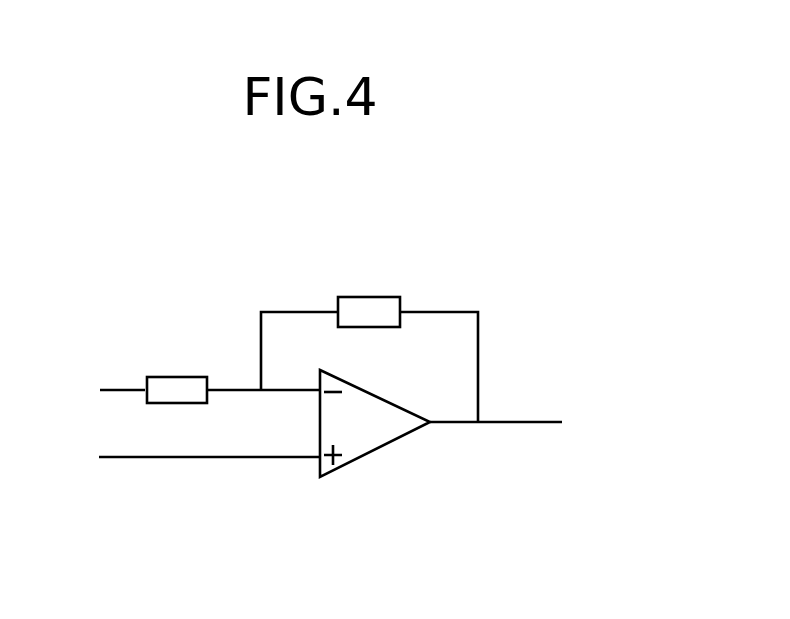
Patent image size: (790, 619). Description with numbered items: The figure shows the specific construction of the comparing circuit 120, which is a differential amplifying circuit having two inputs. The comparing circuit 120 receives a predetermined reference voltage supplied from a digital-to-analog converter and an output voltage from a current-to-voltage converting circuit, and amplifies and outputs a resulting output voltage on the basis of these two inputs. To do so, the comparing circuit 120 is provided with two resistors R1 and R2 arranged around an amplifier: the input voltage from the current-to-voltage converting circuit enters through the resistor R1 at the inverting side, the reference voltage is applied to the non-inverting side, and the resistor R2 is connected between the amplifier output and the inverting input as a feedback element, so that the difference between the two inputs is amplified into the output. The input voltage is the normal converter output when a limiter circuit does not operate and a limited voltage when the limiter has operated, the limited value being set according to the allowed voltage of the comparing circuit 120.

The comparing circuit 120 is at (330, 329).
The resistor R1 is at (177, 377).
The resistor R2 is at (370, 297).